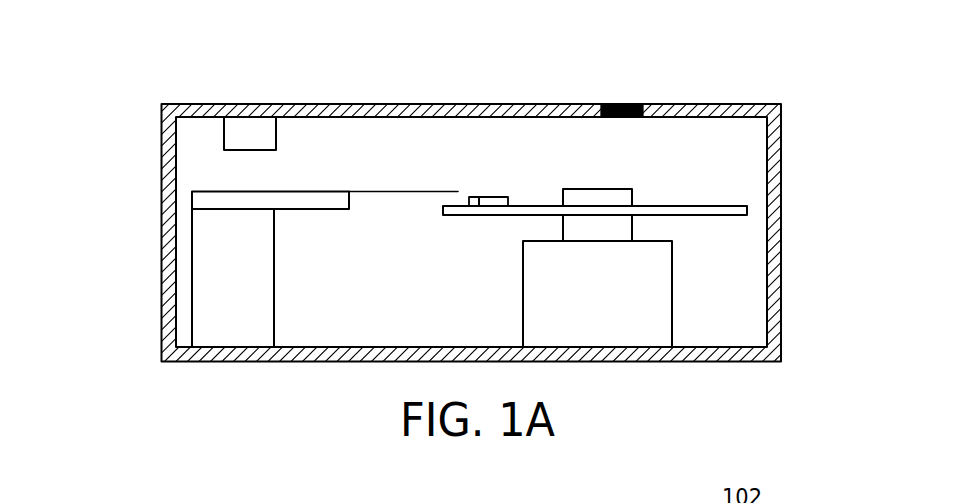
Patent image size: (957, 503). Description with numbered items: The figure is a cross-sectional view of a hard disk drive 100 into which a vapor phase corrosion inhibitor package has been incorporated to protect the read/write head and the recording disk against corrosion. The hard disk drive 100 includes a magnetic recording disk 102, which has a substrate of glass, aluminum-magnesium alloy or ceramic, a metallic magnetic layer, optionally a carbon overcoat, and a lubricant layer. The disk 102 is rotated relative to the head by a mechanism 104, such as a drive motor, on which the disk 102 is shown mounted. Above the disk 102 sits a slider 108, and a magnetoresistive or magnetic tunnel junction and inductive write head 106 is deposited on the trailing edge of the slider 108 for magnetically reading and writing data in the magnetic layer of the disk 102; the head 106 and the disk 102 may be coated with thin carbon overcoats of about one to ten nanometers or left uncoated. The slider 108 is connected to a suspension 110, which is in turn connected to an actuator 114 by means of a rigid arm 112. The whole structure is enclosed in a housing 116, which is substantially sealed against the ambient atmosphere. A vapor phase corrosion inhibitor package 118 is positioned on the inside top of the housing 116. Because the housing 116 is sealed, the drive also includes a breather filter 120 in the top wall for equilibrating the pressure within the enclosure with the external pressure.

The hard disk drive 100 is at (200, 145).
The magnetic recording disk 102 is at (718, 207).
The mechanism 104 is at (630, 190).
The magnetoresistive or magnetic tunnel junction and inductive write head 106 is at (469, 201).
The slider 108 is at (502, 198).
The suspension 110 is at (407, 190).
The rigid arm 112 is at (253, 191).
The actuator 114 is at (239, 313).
The housing 116 is at (782, 186).
The vapor phase corrosion inhibitor (VPCI) package 118 is at (265, 128).
The breather filter 120 is at (637, 103).